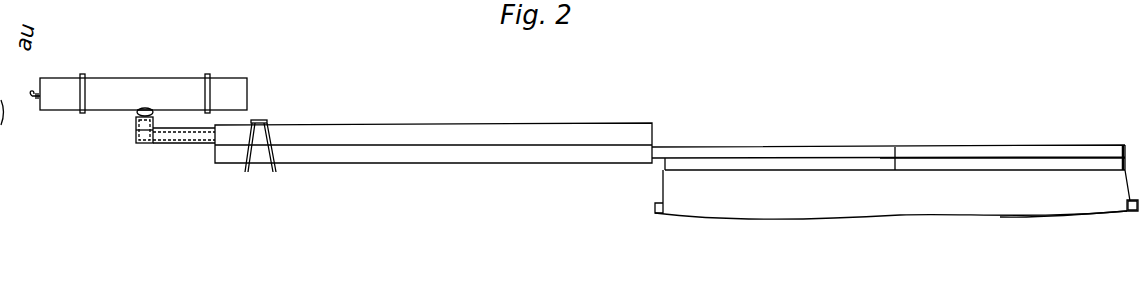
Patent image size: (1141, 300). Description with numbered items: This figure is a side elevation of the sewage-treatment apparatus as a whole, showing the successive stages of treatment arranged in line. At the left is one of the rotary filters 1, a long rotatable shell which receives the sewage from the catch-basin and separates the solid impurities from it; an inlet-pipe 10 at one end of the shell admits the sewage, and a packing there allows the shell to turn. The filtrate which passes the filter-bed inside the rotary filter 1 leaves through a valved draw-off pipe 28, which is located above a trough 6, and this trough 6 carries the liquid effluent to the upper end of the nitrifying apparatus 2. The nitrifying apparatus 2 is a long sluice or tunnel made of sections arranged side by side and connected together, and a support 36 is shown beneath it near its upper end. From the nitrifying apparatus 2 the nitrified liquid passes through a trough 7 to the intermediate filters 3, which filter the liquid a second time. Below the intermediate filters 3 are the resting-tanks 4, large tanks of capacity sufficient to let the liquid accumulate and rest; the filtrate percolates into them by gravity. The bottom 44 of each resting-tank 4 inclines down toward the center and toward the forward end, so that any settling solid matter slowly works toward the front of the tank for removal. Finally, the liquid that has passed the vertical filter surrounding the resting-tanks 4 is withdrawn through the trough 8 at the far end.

The rotary filter 1 is at (146, 68).
The inlet-pipe 10 is at (30, 98).
The valved draw-off pipe 28 is at (137, 118).
The trough 6 is at (184, 144).
The nitrifying apparatus 2 is at (433, 134).
The support frame 36 is at (262, 119).
The intermediate filter 3 is at (888, 147).
The trough 7 is at (930, 152).
The resting-tank 4 is at (896, 204).
The bottom 44 is at (1052, 215).
The trough 8 is at (1125, 213).